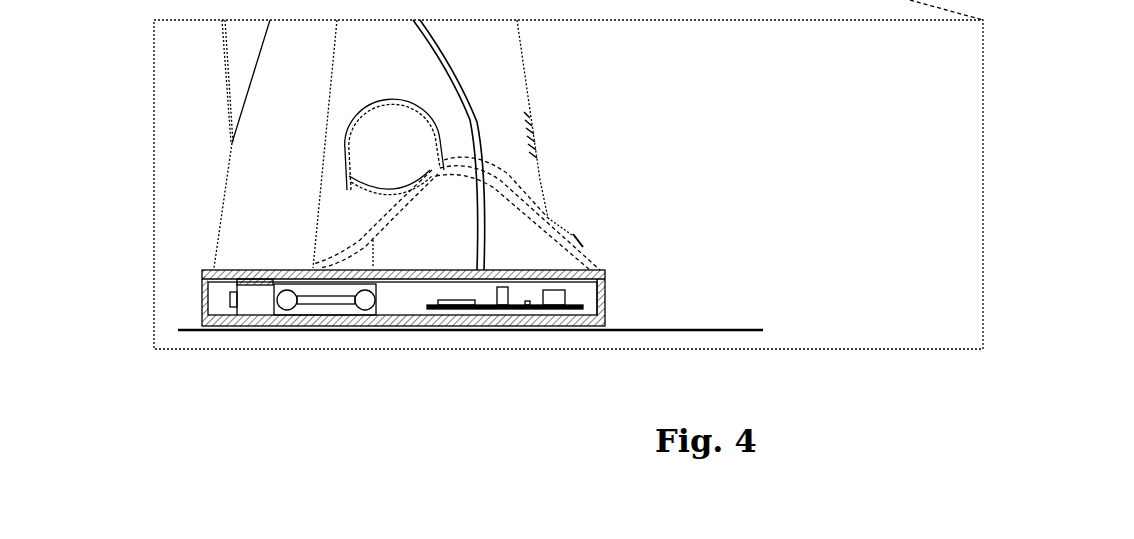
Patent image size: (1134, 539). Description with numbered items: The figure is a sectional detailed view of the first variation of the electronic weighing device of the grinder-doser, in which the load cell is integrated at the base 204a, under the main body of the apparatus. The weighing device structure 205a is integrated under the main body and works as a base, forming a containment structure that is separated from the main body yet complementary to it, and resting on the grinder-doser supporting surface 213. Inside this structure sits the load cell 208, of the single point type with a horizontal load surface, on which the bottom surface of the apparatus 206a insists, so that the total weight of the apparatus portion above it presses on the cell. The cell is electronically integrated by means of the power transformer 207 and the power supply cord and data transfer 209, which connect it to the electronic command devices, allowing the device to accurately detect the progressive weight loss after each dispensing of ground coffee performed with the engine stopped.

The weighing device with integrated load cell at the base 204a is at (178, 279).
The weighing device structure integrated under the main body 205a is at (202, 297).
The bottom surface of the apparatus 206a is at (250, 270).
The power transformer of the load cell 207 is at (488, 309).
The load cell 208 is at (300, 310).
The power supply cord and data transfer 209 is at (480, 100).
The grinder-doser supporting surface 213 is at (765, 327).